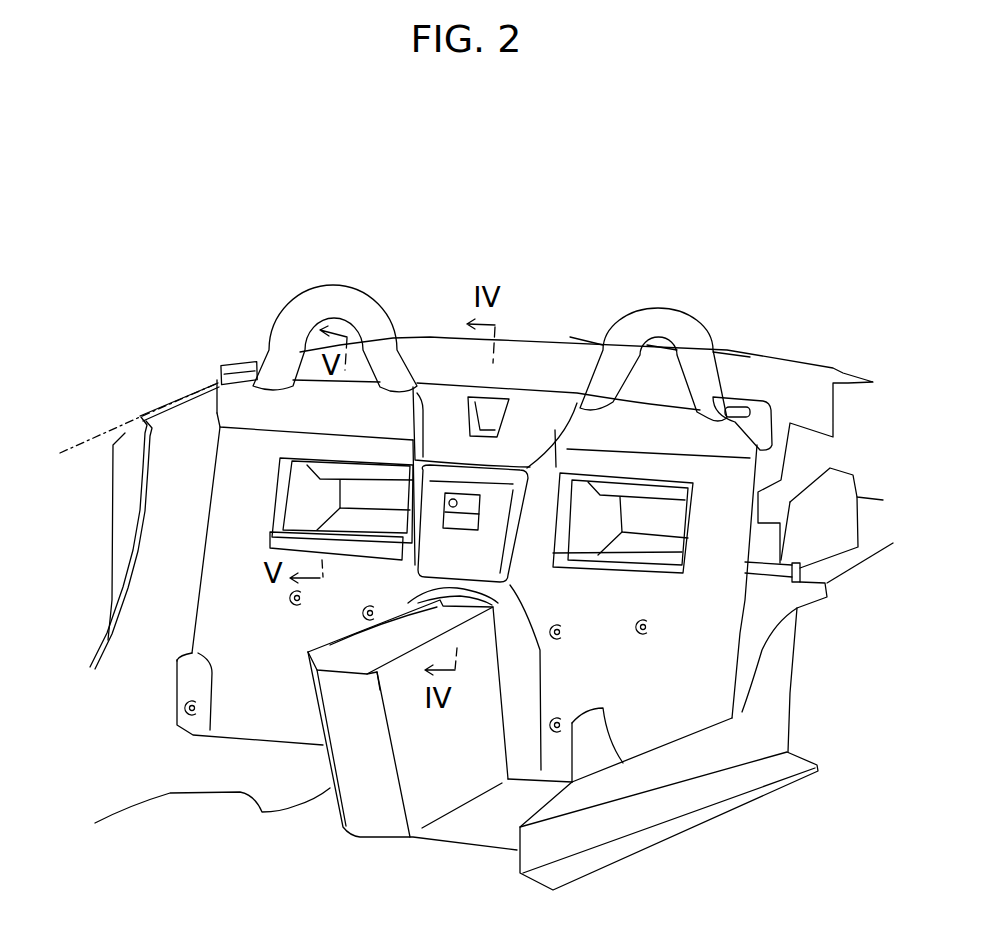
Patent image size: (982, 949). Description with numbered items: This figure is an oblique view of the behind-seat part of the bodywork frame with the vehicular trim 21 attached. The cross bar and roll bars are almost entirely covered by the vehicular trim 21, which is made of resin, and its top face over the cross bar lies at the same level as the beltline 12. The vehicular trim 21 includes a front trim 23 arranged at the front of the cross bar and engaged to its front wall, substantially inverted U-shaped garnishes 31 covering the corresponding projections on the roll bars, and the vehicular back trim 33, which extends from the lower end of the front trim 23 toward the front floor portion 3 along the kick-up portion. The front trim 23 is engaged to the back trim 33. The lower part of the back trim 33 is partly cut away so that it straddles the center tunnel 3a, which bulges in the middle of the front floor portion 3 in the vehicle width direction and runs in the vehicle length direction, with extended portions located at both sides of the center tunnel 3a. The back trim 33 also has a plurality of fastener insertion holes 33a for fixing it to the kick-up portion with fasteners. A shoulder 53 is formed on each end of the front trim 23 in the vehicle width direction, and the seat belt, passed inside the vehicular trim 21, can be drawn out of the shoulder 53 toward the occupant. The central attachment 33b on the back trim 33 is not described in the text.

The front floor portion 3 is at (473, 827).
The center tunnel 3a is at (345, 753).
The beltline 12 is at (93, 430).
The vehicular trim 21 is at (301, 236).
The front trim 23 is at (275, 407).
The garnishes 31 is at (338, 294).
The vehicular back trim 33 is at (242, 463).
The fastener insertion holes 33a is at (643, 627).
The center attachment 33b is at (620, 542).
The shoulder 53 is at (235, 365).